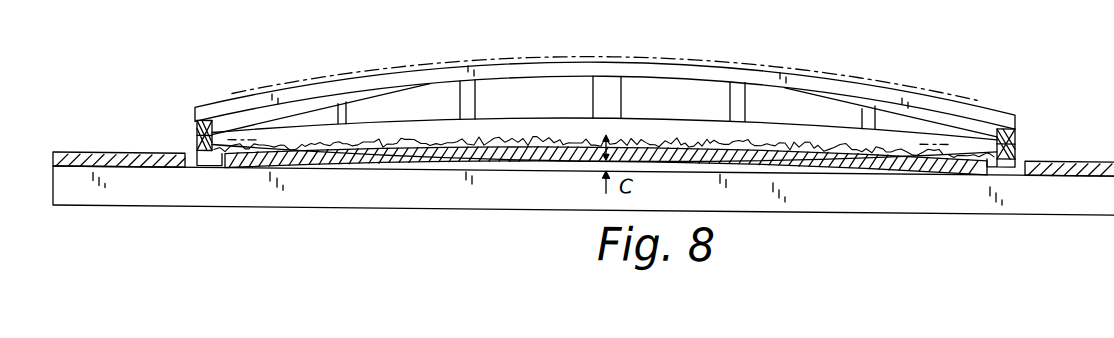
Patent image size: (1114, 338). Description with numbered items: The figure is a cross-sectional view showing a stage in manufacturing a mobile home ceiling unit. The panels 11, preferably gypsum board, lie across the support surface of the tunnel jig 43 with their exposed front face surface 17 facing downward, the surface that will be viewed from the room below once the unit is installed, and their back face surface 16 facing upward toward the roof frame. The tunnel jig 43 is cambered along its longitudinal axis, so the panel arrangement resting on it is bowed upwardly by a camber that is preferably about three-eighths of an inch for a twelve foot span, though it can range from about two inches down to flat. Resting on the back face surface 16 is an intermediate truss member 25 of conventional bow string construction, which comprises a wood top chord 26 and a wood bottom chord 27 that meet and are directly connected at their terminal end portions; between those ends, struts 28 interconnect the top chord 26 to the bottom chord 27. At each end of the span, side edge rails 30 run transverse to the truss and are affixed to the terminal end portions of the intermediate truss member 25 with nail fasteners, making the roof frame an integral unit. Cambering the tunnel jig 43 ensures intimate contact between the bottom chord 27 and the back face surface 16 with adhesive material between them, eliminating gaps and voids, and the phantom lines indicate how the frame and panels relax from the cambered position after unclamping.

The panel 11 is at (257, 146).
The back face surface 16 is at (313, 141).
The exposed front face surface 17 is at (343, 153).
The intermediate truss member 25 is at (632, 53).
The top chord 26 is at (513, 68).
The bottom chord 27 is at (795, 123).
The strut 28 is at (352, 104).
The side edge rail 30 is at (197, 131).
The tunnel jig 43 is at (240, 183).